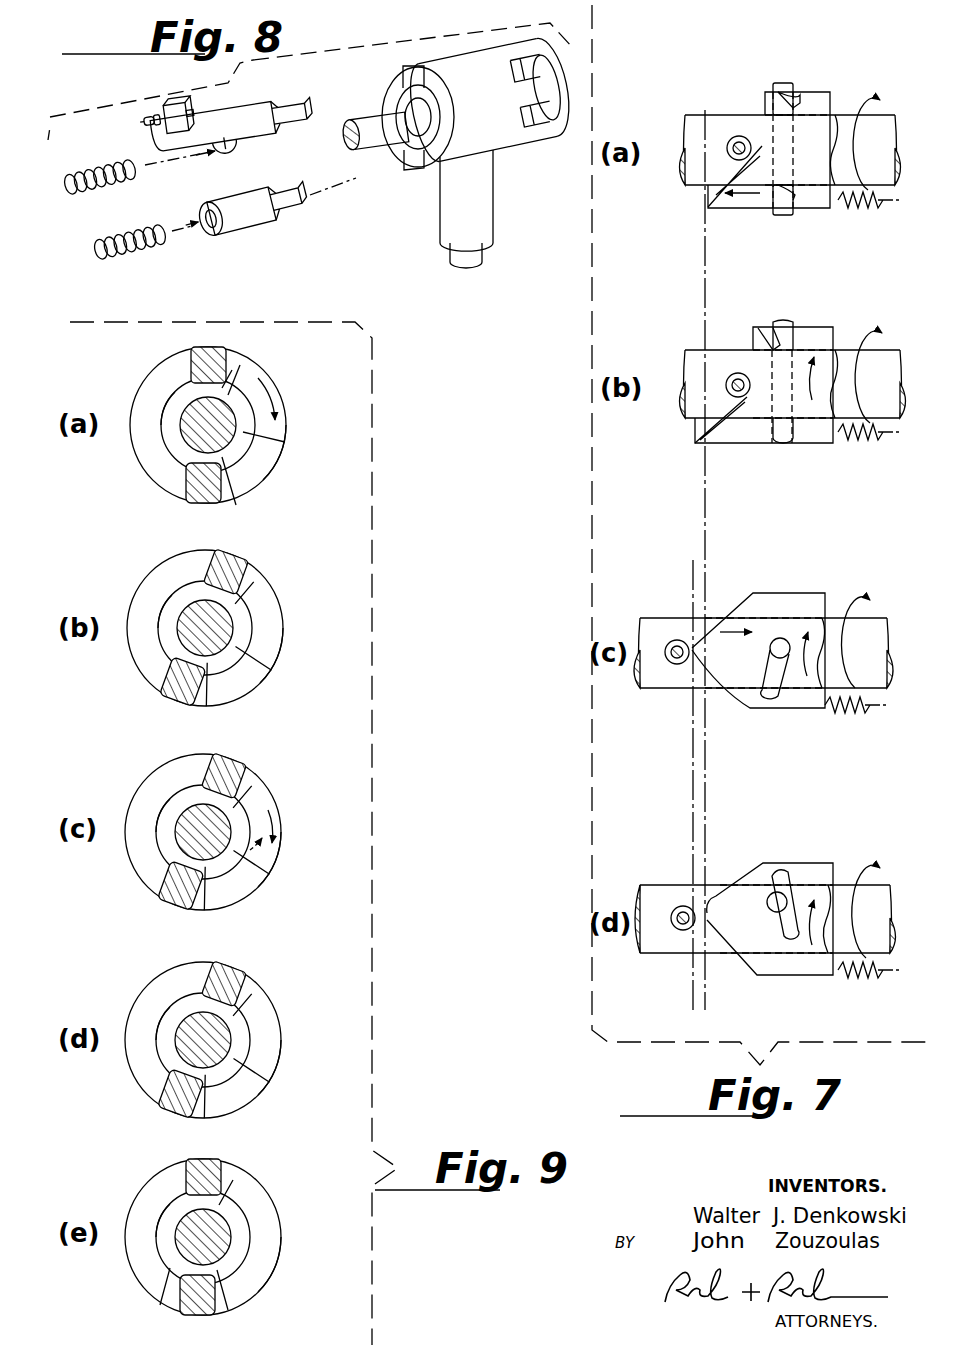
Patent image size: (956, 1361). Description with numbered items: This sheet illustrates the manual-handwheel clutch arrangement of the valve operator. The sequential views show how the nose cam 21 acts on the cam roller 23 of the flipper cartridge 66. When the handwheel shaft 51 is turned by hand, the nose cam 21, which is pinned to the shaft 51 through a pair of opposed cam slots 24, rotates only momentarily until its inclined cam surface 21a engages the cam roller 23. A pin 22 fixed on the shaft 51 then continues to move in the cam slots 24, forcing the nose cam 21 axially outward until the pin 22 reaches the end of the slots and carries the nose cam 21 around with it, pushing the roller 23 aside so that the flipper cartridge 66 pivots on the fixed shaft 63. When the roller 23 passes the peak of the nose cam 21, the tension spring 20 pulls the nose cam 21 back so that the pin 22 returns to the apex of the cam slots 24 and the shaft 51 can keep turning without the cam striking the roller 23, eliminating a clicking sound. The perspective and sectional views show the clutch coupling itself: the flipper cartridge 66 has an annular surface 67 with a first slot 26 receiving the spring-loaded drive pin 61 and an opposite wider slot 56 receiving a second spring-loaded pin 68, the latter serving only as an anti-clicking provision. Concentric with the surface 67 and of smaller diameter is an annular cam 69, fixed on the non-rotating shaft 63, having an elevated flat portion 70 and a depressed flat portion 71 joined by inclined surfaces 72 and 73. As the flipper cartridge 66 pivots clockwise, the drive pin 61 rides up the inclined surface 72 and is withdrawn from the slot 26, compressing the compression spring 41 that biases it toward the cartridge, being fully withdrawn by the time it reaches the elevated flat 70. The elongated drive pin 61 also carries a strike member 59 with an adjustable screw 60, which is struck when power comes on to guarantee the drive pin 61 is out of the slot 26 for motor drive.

In FIG. 7, the tension spring 20 is at (850, 205).
In FIG. 7, the nose cam 21 is at (750, 205).
In FIG. 7, the inclined cam surface 21a is at (708, 206).
In FIG. 7, the pin 22 is at (782, 83).
In FIG. 8, the cam roller 23 is at (476, 258).
In FIG. 7, the cam roller 23 is at (736, 136).
In FIG. 7, the cam slots 24 is at (797, 102).
In FIG. 8, the slot 26 is at (405, 72).
In FIG. 9, the slot 26 is at (220, 350).
In FIG. 8, the compression spring 41 is at (88, 175).
In FIG. 7, the handwheel shaft 51 is at (702, 123).
In FIG. 8, the second slot 56 is at (430, 165).
In FIG. 9, the second slot 56 is at (250, 484).
In FIG. 8, the strike member 59 is at (160, 126).
In FIG. 8, the adjustable screw 60 is at (194, 112).
In FIG. 8, the drive pin 61 is at (254, 138).
In FIG. 9, the drive pin 61 is at (197, 360).
In FIG. 8, the fixed shaft 63 is at (345, 142).
In FIG. 9, the fixed shaft 63 is at (192, 420).
In FIG. 8, the flipper cartridge 66 is at (480, 185).
In FIG. 9, the flipper cartridge 66 is at (275, 373).
In FIG. 8, the annular surface 67 is at (440, 114).
In FIG. 9, the annular surface 67 is at (272, 460).
In FIG. 8, the second spring-loaded pin 68 is at (232, 200).
In FIG. 9, the second spring-loaded pin 68 is at (200, 500).
In FIG. 8, the annular cam 69 is at (398, 165).
In FIG. 9, the annular cam 69 is at (250, 410).
In FIG. 8, the elevated flat portion 70 is at (424, 136).
In FIG. 9, the elevated flat portion 70 is at (243, 432).
In FIG. 8, the depressed flat portion 71 is at (404, 106).
In FIG. 9, the depressed flat portion 71 is at (176, 440).
In FIG. 9, the inclined surface 72 is at (233, 390).
In FIG. 9, the inclined surface 73 is at (232, 482).